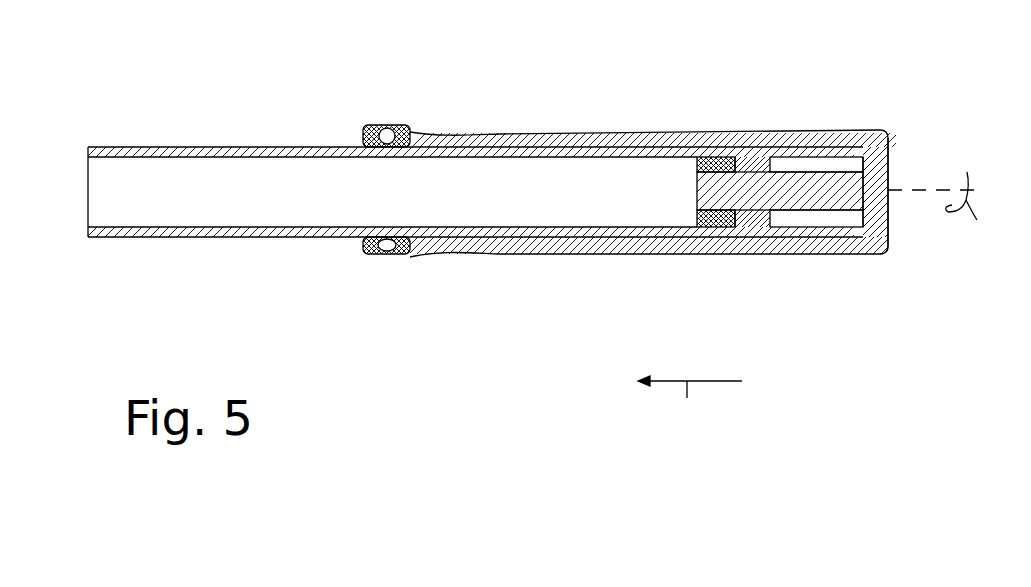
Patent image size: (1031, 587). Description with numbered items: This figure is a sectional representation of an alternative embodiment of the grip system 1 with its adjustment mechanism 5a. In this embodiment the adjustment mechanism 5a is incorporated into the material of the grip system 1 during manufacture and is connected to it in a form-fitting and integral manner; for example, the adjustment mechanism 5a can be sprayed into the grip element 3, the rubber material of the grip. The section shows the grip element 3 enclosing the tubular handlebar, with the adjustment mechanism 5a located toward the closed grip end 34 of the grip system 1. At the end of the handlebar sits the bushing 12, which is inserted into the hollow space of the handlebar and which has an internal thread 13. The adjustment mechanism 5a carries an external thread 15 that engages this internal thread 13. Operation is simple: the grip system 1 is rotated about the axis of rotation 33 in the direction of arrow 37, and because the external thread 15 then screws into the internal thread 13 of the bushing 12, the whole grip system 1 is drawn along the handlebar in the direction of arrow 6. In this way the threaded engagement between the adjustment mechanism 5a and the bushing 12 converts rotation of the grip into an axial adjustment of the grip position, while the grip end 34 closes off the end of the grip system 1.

The grip system 1 is at (540, 191).
The grip element 3 is at (820, 144).
The adjustment mechanism 5a is at (840, 198).
The arrow 6 is at (690, 413).
The bushing 12 is at (723, 163).
The internal thread 13 is at (715, 212).
The external thread 15 is at (805, 200).
The axis of rotation 33 is at (925, 182).
The grip end 34 is at (888, 228).
The arrow 37 is at (969, 209).